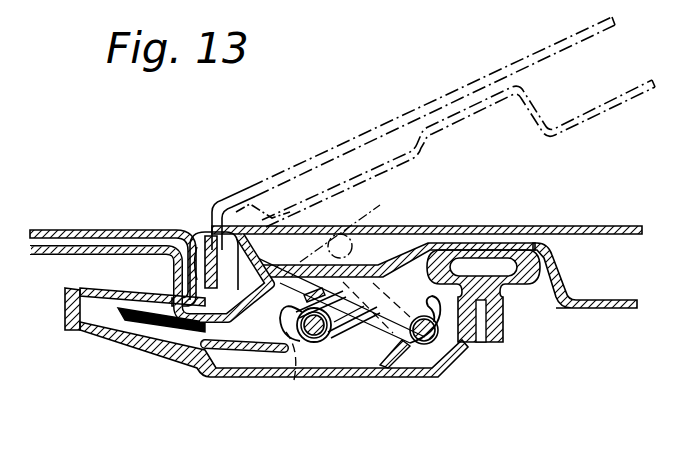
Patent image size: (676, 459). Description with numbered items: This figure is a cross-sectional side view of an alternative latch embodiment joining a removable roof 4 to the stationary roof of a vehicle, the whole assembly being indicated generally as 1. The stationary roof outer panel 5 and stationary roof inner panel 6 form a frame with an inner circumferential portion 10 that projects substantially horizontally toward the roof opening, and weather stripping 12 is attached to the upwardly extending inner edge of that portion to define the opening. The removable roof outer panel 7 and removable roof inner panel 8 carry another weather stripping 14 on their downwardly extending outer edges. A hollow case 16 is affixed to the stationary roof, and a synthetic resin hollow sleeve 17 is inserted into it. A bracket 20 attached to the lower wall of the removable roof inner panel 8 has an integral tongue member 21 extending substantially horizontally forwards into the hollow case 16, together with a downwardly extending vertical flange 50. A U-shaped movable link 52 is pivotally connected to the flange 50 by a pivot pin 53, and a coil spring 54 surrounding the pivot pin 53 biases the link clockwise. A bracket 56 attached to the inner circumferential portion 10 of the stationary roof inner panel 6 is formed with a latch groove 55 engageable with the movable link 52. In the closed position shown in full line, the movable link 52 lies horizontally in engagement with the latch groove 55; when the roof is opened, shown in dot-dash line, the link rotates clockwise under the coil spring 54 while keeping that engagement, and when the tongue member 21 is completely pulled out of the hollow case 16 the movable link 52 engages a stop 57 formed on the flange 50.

The panel assembly 1 is at (80, 224).
The removable roof 4 is at (506, 212).
The stationary roof outer panel 5 is at (108, 230).
The stationary roof inner panel 6 is at (44, 256).
The removable roof outer panel 7 is at (538, 52).
The removable roof inner panel 8 is at (607, 102).
The inner circumferential portion 10 is at (309, 342).
The weather stripping 12 is at (500, 312).
The weather stripping 14 is at (193, 228).
The hollow case 16 is at (70, 333).
The hollow sleeve 17 is at (168, 343).
The bracket 20 is at (250, 330).
The tongue member 21 is at (118, 326).
The vertical flange 50 is at (218, 352).
The movable link 52 is at (348, 340).
The pivot pin 53 is at (290, 385).
The coil spring 54 is at (327, 345).
The latch groove 55 is at (455, 346).
The bracket 56 is at (410, 348).
The stop 57 is at (365, 203).